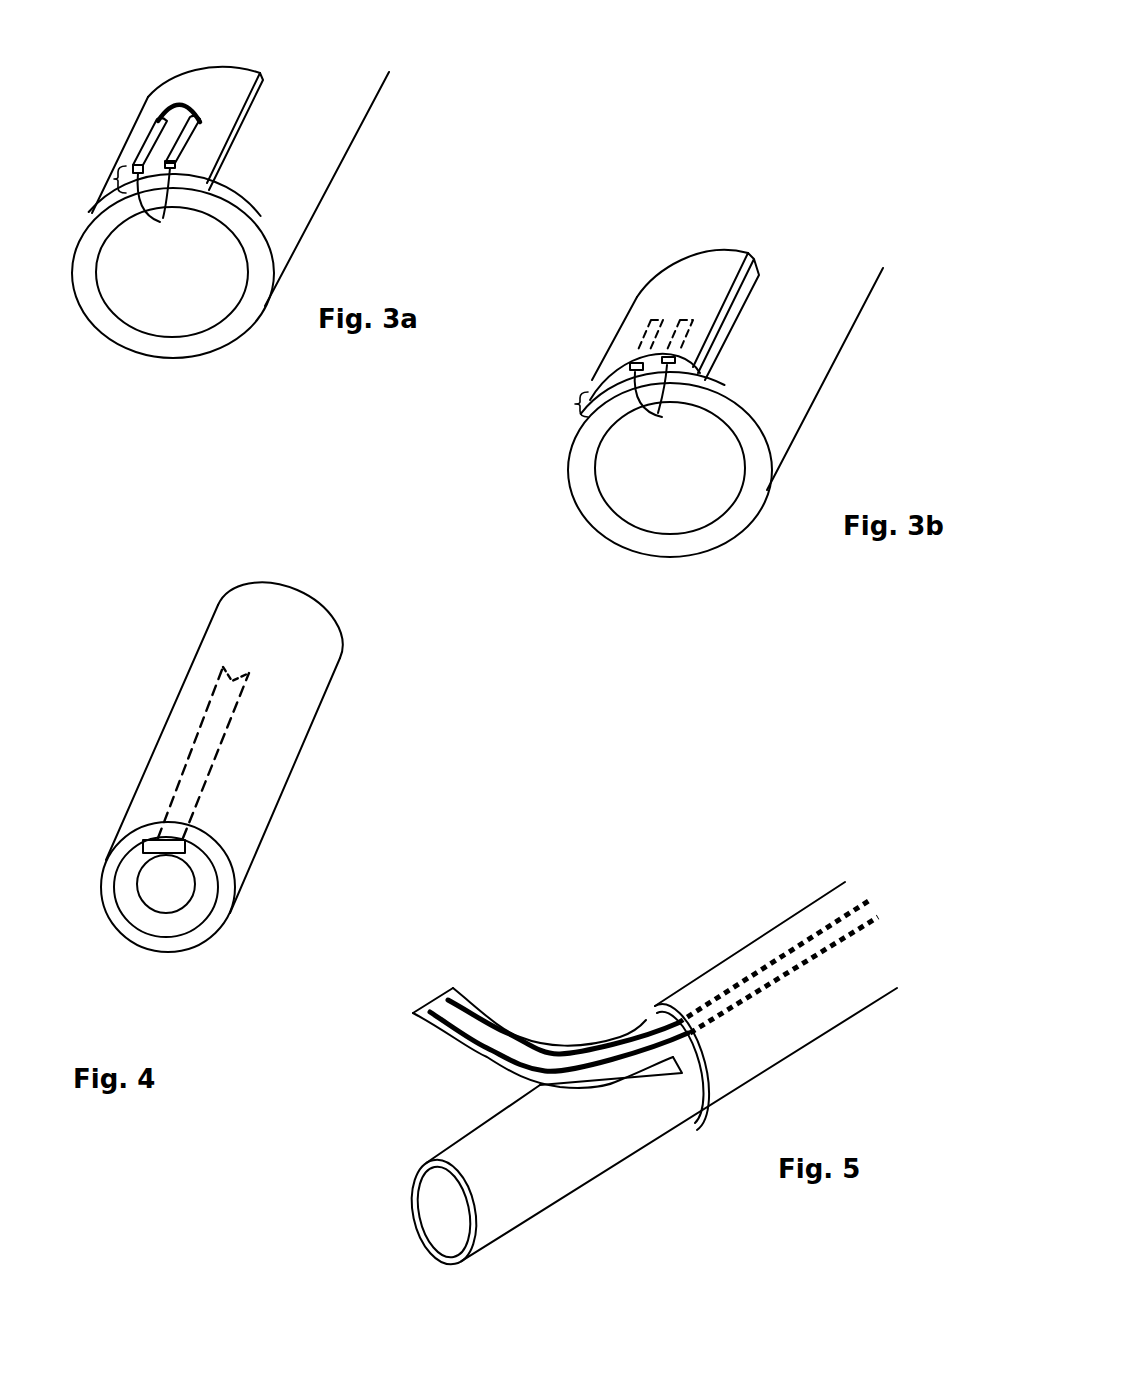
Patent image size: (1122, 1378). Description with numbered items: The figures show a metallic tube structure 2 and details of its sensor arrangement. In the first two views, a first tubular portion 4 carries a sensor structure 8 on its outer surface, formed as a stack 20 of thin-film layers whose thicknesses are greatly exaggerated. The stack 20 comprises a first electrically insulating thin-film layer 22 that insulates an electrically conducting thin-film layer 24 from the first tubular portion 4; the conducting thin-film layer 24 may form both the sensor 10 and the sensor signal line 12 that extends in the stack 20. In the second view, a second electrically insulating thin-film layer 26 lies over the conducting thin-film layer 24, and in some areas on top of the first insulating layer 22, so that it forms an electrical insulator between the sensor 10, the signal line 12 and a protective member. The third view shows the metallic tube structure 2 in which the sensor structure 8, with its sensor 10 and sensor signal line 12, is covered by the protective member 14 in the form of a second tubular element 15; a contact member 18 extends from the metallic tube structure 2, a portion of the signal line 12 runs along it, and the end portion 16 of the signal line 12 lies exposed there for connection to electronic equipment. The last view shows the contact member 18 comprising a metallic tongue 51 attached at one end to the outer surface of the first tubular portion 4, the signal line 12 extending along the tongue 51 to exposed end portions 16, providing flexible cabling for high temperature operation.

In FIG. 4, the metallic tube structure 2 is at (375, 605).
In FIG. 3A, the first tubular portion 4 is at (232, 325).
In FIG. 3B, the first tubular portion 4 is at (730, 522).
In FIG. 4, the first tubular portion 4 is at (168, 925).
In FIG. 5, the first tubular portion 4 is at (443, 1255).
In FIG. 3A, the sensor structure 8 is at (264, 146).
In FIG. 3B, the sensor structure 8 is at (761, 339).
In FIG. 4, the sensor structure 8 is at (175, 710).
In FIG. 3A, the sensor 10 is at (186, 98).
In FIG. 3B, the sensor 10 is at (698, 315).
In FIG. 4, the sensor 10 is at (237, 670).
In FIG. 3A, the sensor signal line 12 is at (180, 146).
In FIG. 3B, the sensor signal line 12 is at (682, 323).
In FIG. 4, the sensor signal line 12 is at (190, 755).
In FIG. 5, the sensor signal line 12 is at (800, 972).
In FIG. 4, the protective member 14 is at (197, 937).
In FIG. 5, the protective member 14 is at (697, 1117).
In FIG. 4, the second tubular element 15 is at (253, 805).
In FIG. 4, the end portion of sensor signal line 16 is at (150, 860).
In FIG. 5, the end portion of sensor signal line 16 is at (458, 1038).
In FIG. 4, the contact member 18 is at (183, 864).
In FIG. 5, the contact member 18 is at (575, 961).
In FIG. 3A, the stack of thin-film layers 20 is at (114, 179).
In FIG. 3B, the stack of thin-film layers 20 is at (575, 405).
In FIG. 3A, the first electrically insulating thin-film layer 22 is at (207, 183).
In FIG. 3B, the first electrically insulating thin-film layer 22 is at (705, 373).
In FIG. 3A, the electrically conducting thin-film layer 24 is at (160, 222).
In FIG. 3B, the electrically conducting thin-film layer 24 is at (665, 401).
In FIG. 3B, the second electrically insulating thin-film layer 26 is at (597, 380).
In FIG. 5, the metallic tongue 51 is at (495, 1033).